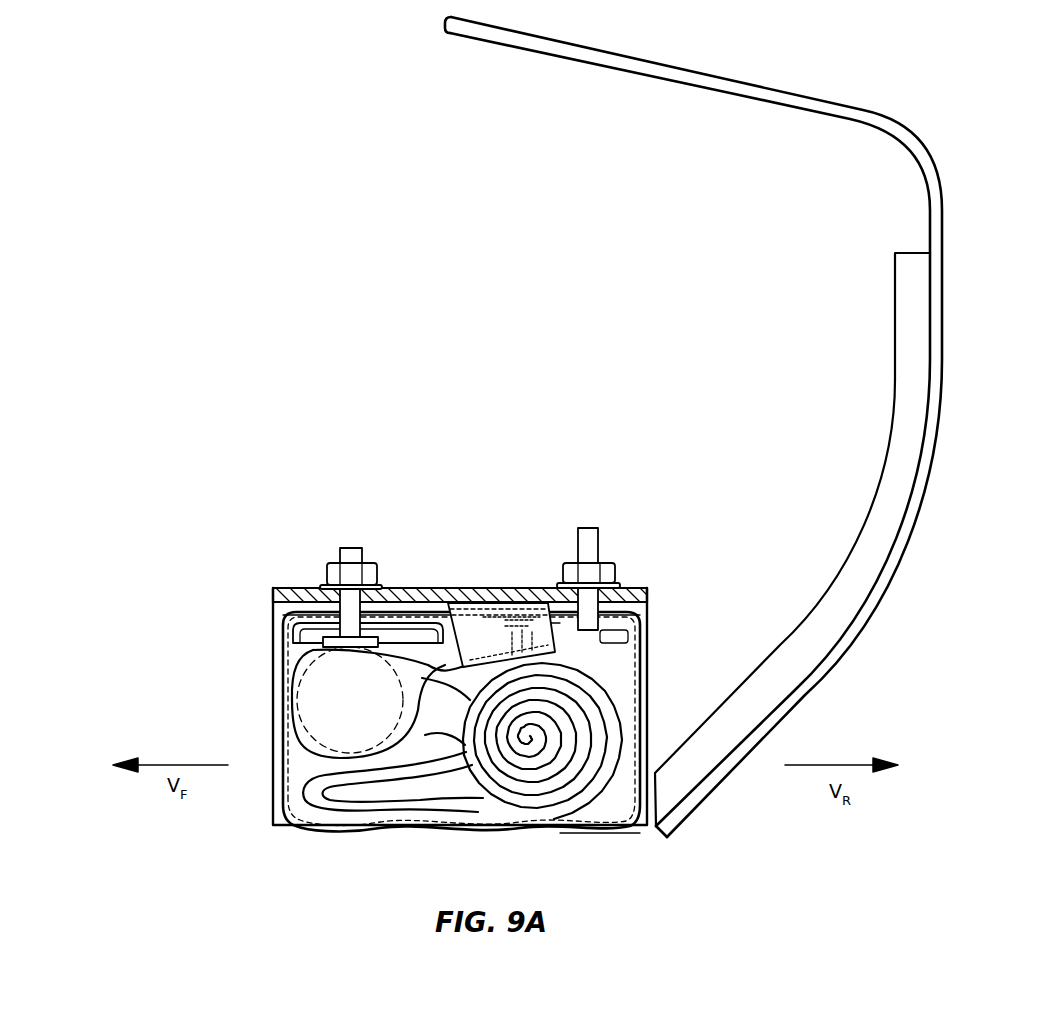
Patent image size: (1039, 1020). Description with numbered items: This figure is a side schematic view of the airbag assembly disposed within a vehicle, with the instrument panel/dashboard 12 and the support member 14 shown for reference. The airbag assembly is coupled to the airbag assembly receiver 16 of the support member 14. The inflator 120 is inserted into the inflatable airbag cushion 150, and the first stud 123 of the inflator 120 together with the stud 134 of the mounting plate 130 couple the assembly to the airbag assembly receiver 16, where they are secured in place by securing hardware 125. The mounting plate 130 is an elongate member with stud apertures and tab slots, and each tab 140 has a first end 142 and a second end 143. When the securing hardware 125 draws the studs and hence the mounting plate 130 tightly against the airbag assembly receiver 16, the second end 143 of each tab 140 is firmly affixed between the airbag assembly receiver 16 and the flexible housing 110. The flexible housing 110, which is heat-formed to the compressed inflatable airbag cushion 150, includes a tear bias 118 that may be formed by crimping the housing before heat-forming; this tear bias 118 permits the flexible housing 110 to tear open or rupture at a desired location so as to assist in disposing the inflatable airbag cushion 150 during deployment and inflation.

The instrument panel/dashboard 12 is at (930, 156).
The support member 14 is at (885, 511).
The airbag assembly receiver 16 is at (302, 597).
The flexible housing 110 is at (649, 670).
The tear bias 118 is at (603, 845).
The inflator 120 is at (335, 688).
The first stud 123 is at (351, 555).
The securing hardware 125 is at (357, 573).
The mounting plate 130 is at (638, 627).
The stud 134 is at (584, 540).
The tab 140 is at (470, 640).
The first end 142 is at (517, 617).
The second end 143 is at (508, 598).
The inflatable airbag cushion 150 is at (641, 700).